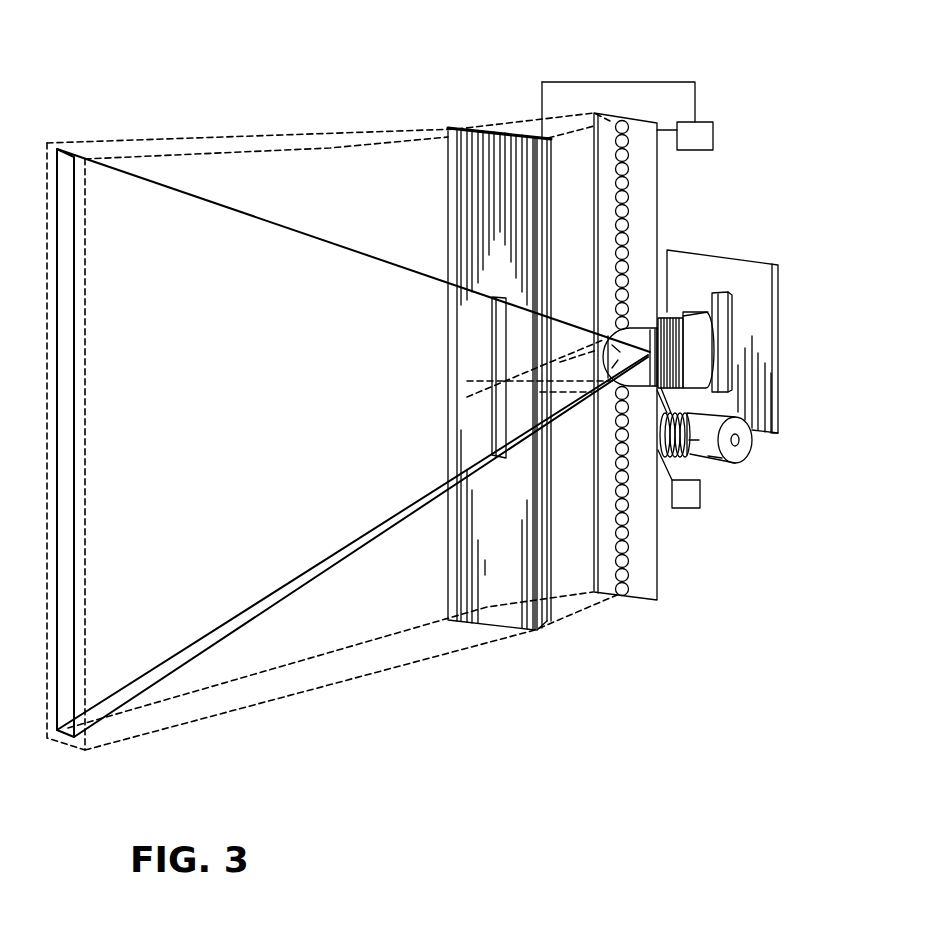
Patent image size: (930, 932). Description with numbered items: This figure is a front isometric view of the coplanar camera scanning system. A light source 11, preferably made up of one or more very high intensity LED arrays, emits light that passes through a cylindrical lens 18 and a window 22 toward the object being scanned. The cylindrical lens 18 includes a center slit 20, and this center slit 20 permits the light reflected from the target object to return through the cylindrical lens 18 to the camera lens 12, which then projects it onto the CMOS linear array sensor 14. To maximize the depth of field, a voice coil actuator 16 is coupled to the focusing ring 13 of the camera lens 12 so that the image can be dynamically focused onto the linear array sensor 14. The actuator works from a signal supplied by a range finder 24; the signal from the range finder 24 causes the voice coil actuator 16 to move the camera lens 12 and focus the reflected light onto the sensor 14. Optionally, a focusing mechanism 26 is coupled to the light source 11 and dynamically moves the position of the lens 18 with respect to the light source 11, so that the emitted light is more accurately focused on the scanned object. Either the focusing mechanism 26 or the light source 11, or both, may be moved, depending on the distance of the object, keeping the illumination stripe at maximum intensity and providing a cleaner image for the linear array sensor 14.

The light source 11 is at (636, 586).
The camera lens 12 is at (684, 316).
The focusing ring 13 is at (603, 338).
The linear array sensor 14 is at (727, 292).
The voice coil actuator 16 is at (717, 464).
The cylindrical lens 18 is at (512, 128).
The center slit 20 is at (492, 430).
The window 22 is at (455, 129).
The range finder 24 is at (690, 509).
The focusing mechanism 26 is at (715, 122).